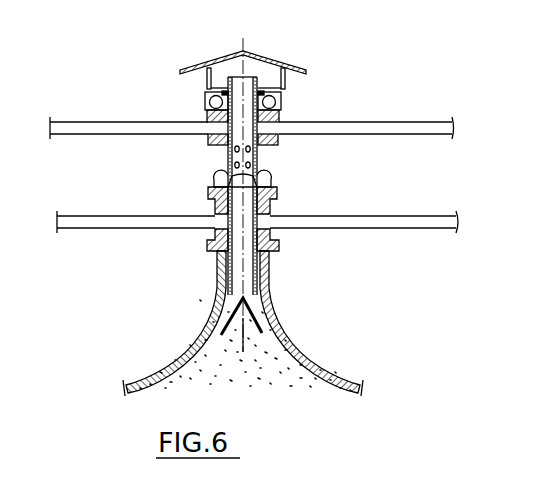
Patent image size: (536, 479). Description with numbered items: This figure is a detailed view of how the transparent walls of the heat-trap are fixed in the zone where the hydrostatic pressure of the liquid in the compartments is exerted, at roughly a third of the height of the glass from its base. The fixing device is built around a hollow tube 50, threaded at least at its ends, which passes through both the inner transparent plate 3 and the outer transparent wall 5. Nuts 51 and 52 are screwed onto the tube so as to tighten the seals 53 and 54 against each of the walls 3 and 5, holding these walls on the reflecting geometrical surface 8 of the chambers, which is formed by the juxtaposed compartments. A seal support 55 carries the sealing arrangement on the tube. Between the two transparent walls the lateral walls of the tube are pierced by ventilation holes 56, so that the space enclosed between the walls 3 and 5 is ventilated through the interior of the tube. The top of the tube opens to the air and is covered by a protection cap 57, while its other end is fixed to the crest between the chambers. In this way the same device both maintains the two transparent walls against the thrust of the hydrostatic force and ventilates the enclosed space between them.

The protection cap 57 is at (262, 62).
The nut 52 is at (272, 97).
The seal 54 is at (270, 140).
The transparent wall 5 is at (418, 128).
The ventilation holes 56 is at (234, 150).
The hollow tube 50 is at (258, 153).
The nut 51 is at (272, 179).
The seal 53 is at (272, 200).
The transparent plate 3 is at (418, 224).
The seal support 55 is at (281, 238).
The geometrical surface 8 is at (288, 338).